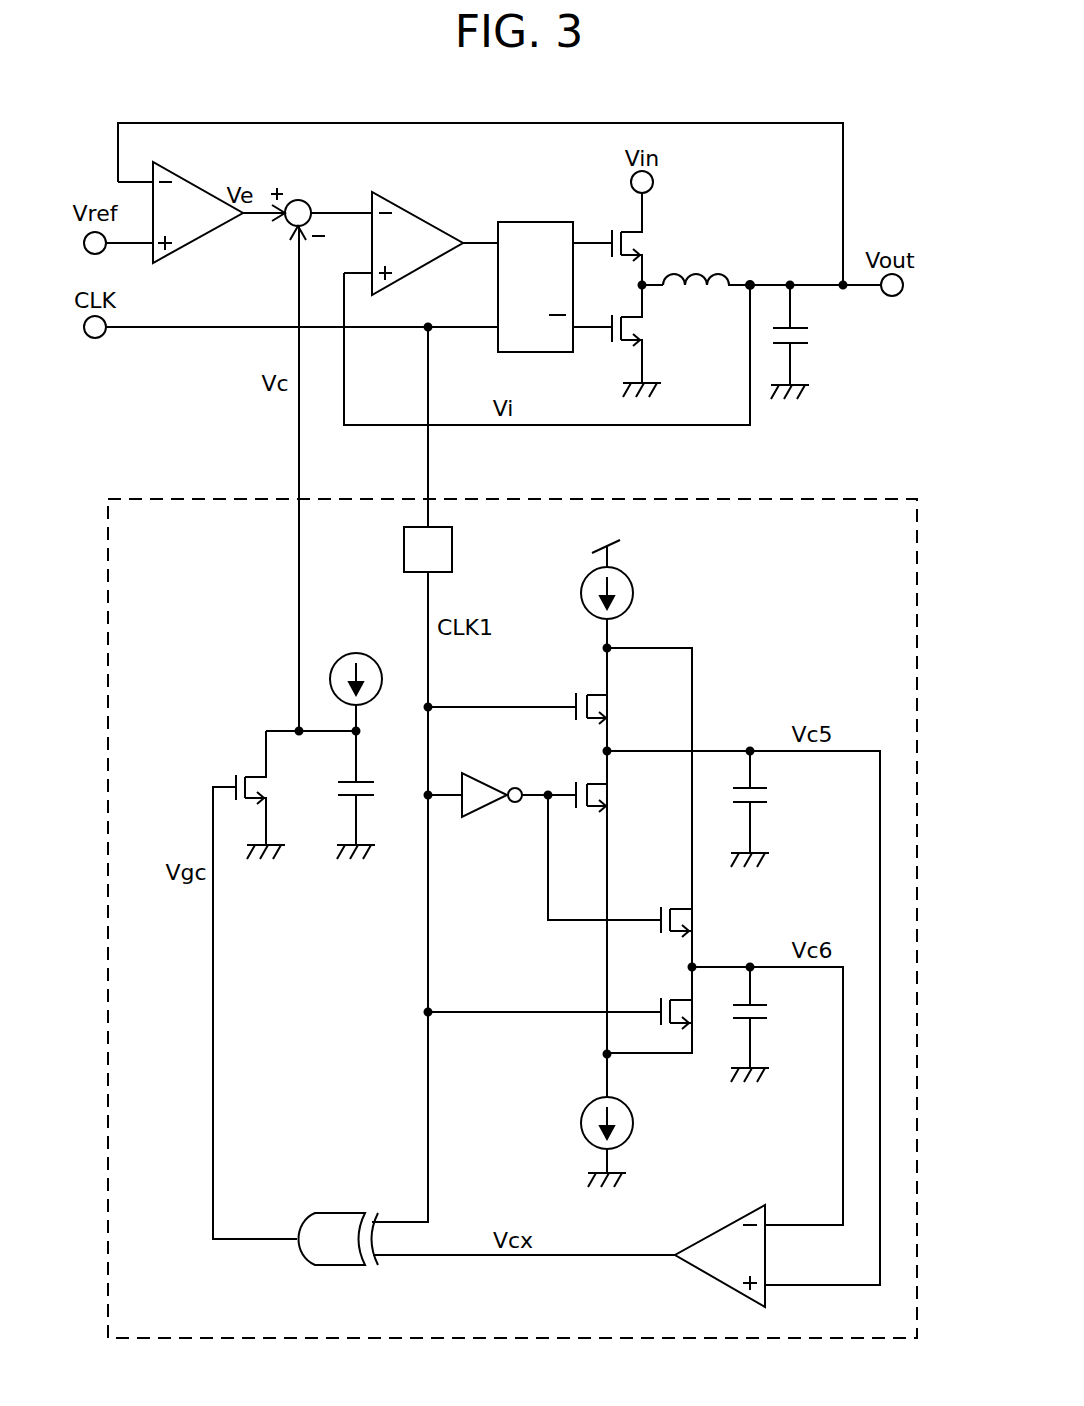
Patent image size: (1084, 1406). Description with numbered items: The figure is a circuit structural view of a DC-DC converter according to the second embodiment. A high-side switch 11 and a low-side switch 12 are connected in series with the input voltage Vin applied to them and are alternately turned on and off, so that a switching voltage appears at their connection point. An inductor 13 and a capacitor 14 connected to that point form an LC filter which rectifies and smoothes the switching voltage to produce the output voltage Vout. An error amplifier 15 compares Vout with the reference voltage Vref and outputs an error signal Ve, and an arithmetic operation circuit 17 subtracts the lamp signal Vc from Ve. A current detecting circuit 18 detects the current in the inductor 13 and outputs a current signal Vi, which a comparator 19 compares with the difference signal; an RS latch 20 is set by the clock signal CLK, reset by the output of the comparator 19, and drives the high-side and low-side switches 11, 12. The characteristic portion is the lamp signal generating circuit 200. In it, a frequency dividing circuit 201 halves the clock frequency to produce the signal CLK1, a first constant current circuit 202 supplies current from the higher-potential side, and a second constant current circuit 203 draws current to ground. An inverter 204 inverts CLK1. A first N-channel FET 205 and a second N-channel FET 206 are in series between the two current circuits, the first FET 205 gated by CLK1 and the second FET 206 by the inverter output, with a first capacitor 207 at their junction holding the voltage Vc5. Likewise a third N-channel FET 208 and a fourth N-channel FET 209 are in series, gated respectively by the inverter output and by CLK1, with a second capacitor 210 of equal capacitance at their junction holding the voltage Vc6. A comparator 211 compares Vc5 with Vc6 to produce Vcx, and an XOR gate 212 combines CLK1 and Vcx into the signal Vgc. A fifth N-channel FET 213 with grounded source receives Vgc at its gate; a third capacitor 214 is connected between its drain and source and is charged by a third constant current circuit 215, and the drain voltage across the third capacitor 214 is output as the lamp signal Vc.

The high-side switch 11 is at (636, 232).
The low-side switch 12 is at (636, 318).
The inductor 13 is at (715, 276).
The capacitor 14 is at (800, 343).
The error amplifier 15 is at (206, 236).
The arithmetic operation circuit 17 is at (306, 202).
The current detecting circuit 18 is at (757, 280).
The comparator 19 is at (410, 212).
The RS latch 20 is at (536, 222).
The lamp signal generating circuit 200 is at (160, 496).
The frequency dividing circuit 201 is at (455, 550).
The first constant current circuit 202 is at (632, 585).
The second constant current circuit 203 is at (581, 1118).
The inverter 204 is at (478, 812).
The first N-channel FET 205 is at (592, 692).
The second N-channel FET 206 is at (592, 780).
The first capacitor 207 is at (763, 800).
The third N-channel FET 208 is at (675, 906).
The fourth N-channel FET 209 is at (675, 997).
The second capacitor 210 is at (763, 1018).
The comparator 211 is at (715, 1280).
The XOR gate 212 is at (336, 1211).
The fifth N-channel FET 213 is at (251, 775).
The third capacitor 214 is at (346, 780).
The third constant current circuit 215 is at (368, 654).